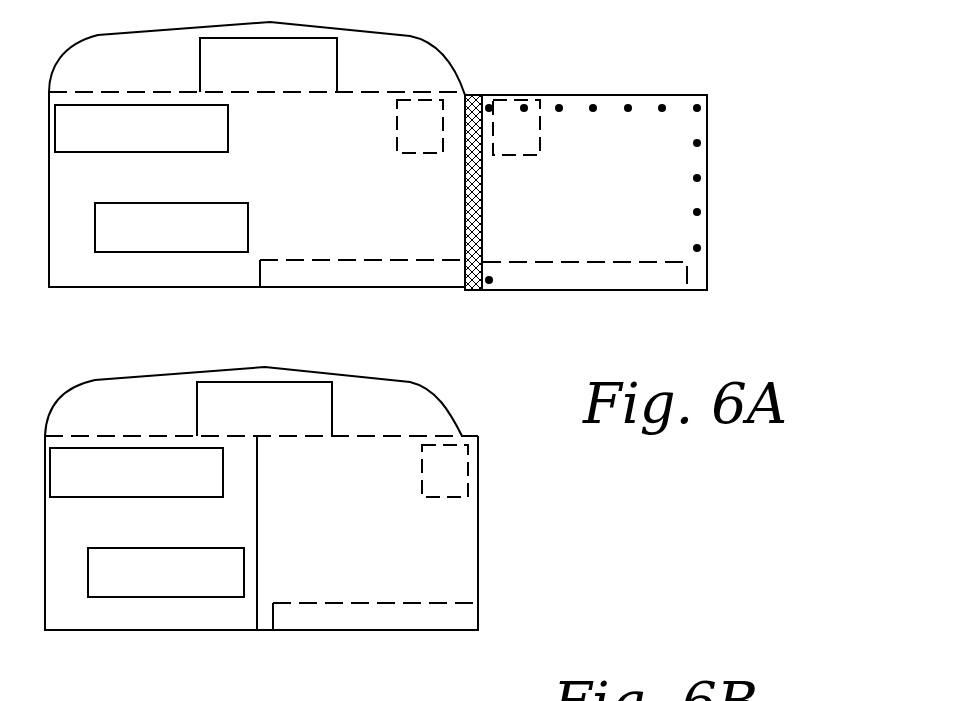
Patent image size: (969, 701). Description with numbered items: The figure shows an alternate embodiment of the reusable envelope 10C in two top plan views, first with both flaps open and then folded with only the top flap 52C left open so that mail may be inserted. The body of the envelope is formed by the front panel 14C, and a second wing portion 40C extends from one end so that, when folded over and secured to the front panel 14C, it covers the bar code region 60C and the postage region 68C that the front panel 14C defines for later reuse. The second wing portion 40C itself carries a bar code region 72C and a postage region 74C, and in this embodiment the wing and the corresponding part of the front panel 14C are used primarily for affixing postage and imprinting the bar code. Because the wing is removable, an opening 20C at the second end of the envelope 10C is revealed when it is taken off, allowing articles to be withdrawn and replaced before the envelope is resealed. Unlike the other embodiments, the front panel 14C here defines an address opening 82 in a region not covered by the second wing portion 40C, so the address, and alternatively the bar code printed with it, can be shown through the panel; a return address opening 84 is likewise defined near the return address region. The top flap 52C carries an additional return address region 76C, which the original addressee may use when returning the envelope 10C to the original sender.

In FIG. 6A, the reusable envelope 10C is at (569, 45).
In FIG. 6B, the reusable envelope 10C is at (597, 500).
In FIG. 6A, the front panel 14C is at (368, 230).
In FIG. 6B, the front panel 14C is at (245, 530).
In FIG. 6A, the opening 20C is at (470, 289).
In FIG. 6A, the second wing portion 40C is at (605, 233).
In FIG. 6B, the second wing portion 40C is at (363, 531).
In FIG. 6A, the top flap 52C is at (410, 84).
In FIG. 6B, the top flap 52C is at (406, 424).
In FIG. 6A, the bar code region 60C is at (354, 287).
In FIG. 6A, the postage region 68C is at (438, 144).
In FIG. 6A, the bar code region 72C is at (591, 288).
In FIG. 6B, the bar code region 72C is at (388, 626).
In FIG. 6A, the postage region 74C is at (541, 144).
In FIG. 6B, the postage region 74C is at (458, 491).
In FIG. 6A, the additional return address region 76C is at (290, 69).
In FIG. 6B, the additional return address region 76C is at (286, 424).
In FIG. 6A, the address opening 82 is at (248, 216).
In FIG. 6B, the address opening 82 is at (244, 578).
In FIG. 6A, the return address opening 84 is at (228, 133).
In FIG. 6B, the return address opening 84 is at (93, 497).